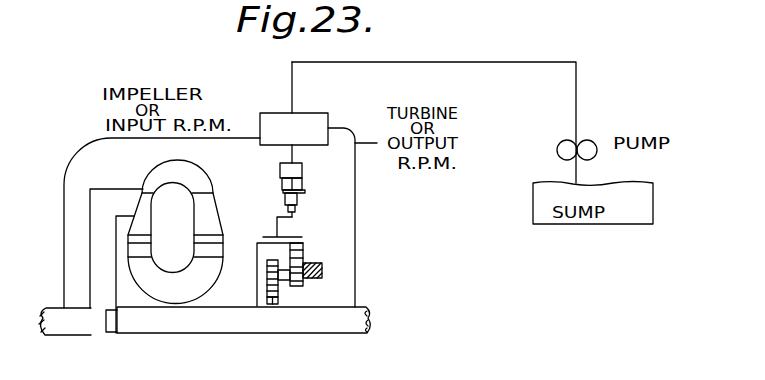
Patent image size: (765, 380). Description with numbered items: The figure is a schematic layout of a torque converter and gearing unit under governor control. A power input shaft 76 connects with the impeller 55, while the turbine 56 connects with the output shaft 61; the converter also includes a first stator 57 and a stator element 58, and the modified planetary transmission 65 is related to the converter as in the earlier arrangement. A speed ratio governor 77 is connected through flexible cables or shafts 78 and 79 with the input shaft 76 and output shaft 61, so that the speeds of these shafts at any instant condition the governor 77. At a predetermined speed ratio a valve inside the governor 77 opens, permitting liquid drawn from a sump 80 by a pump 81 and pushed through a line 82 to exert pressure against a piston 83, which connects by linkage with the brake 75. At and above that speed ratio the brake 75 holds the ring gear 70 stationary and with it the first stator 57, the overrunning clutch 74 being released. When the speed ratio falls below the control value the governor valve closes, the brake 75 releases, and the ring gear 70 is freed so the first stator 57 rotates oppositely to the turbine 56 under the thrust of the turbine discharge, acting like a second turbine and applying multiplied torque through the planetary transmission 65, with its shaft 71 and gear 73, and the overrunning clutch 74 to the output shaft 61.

The impeller 55 is at (207, 202).
The turbine 56 is at (151, 204).
The first stator 57 is at (151, 251).
The stator 58 is at (222, 248).
The output shaft 61 is at (167, 327).
The modified planetary transmission 65 is at (338, 263).
The ring gear 70 is at (303, 243).
The drive shaft 71 is at (303, 262).
The gear 73 is at (283, 297).
The overrunning clutch 74 is at (291, 306).
The brake 75 is at (292, 235).
The power input shaft 76 is at (61, 330).
The speed ratio governor 77 is at (306, 137).
The flexible cable or shaft 78 is at (217, 139).
The flexible cable or shaft 79 is at (355, 200).
The sump 80 is at (653, 195).
The pump 81 is at (589, 140).
The line 82 is at (440, 62).
The piston 83 is at (302, 170).